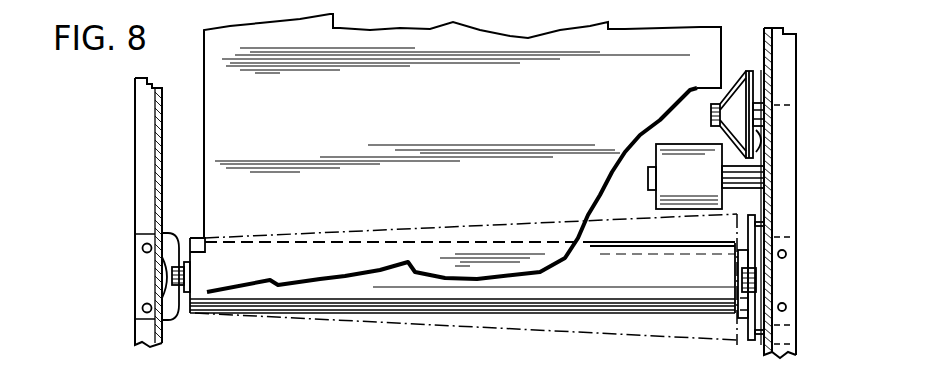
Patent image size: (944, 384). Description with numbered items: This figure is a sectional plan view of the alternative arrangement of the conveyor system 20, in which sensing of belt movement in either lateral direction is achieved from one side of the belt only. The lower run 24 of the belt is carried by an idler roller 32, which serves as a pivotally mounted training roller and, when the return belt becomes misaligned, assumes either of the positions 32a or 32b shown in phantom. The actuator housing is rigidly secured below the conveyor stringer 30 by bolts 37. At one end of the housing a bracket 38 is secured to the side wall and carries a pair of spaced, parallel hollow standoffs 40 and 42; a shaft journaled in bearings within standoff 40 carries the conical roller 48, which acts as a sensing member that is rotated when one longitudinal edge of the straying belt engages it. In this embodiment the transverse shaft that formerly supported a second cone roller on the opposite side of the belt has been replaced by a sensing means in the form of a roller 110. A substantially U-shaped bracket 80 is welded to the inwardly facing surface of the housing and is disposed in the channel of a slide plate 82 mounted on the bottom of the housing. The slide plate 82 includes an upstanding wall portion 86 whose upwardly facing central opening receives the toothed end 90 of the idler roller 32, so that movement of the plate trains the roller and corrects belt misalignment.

The conveyor system 20 is at (799, 63).
The lower run 24 is at (212, 82).
The conveyor stringer 30 is at (138, 170).
The idler roller 32 is at (343, 288).
The training roller position 32a is at (498, 222).
The training roller position 32b is at (405, 330).
The bolt 37 is at (786, 252).
The bracket 38 is at (757, 145).
The standoff 40 is at (758, 100).
The standoff 42 is at (757, 176).
The conical roller 48 is at (736, 95).
The U-shaped bracket 80 is at (752, 341).
The slide plate 82 is at (758, 233).
The upstanding wall portion 86 is at (752, 302).
The toothed end 90 is at (757, 282).
The roller 110 is at (679, 163).